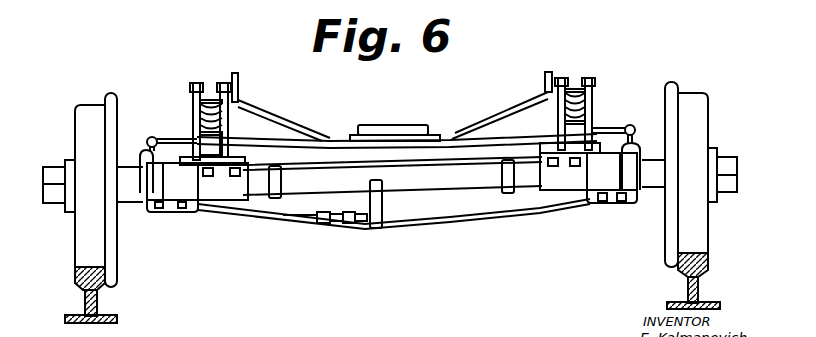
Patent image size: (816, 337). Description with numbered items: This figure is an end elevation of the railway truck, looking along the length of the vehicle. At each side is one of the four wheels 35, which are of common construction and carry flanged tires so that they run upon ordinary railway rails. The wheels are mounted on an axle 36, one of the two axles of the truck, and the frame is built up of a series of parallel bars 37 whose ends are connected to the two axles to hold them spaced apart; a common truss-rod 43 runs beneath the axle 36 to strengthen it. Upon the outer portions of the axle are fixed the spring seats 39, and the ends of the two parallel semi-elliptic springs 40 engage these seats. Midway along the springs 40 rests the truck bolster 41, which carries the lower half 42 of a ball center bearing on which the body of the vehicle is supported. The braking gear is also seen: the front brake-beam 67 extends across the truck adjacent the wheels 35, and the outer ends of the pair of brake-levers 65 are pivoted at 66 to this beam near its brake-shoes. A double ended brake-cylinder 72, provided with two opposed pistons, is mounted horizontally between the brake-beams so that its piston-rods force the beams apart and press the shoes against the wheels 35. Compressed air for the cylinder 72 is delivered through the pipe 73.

The wheel 35 is at (87, 105).
The axle 36 is at (447, 205).
The parallel bar 37 is at (126, 203).
The spring seat 39 is at (220, 164).
The semi-elliptic spring 40 is at (195, 107).
The truck bolster 41 is at (518, 105).
The lower half of ball center bearing 42 is at (408, 125).
The truss-rod 43 is at (286, 224).
The brake-lever 65 is at (173, 201).
The pivot 66 is at (153, 212).
The front brake-beam 67 is at (336, 165).
The double ended brake-cylinder 72 is at (143, 162).
The pipe 73 is at (147, 139).